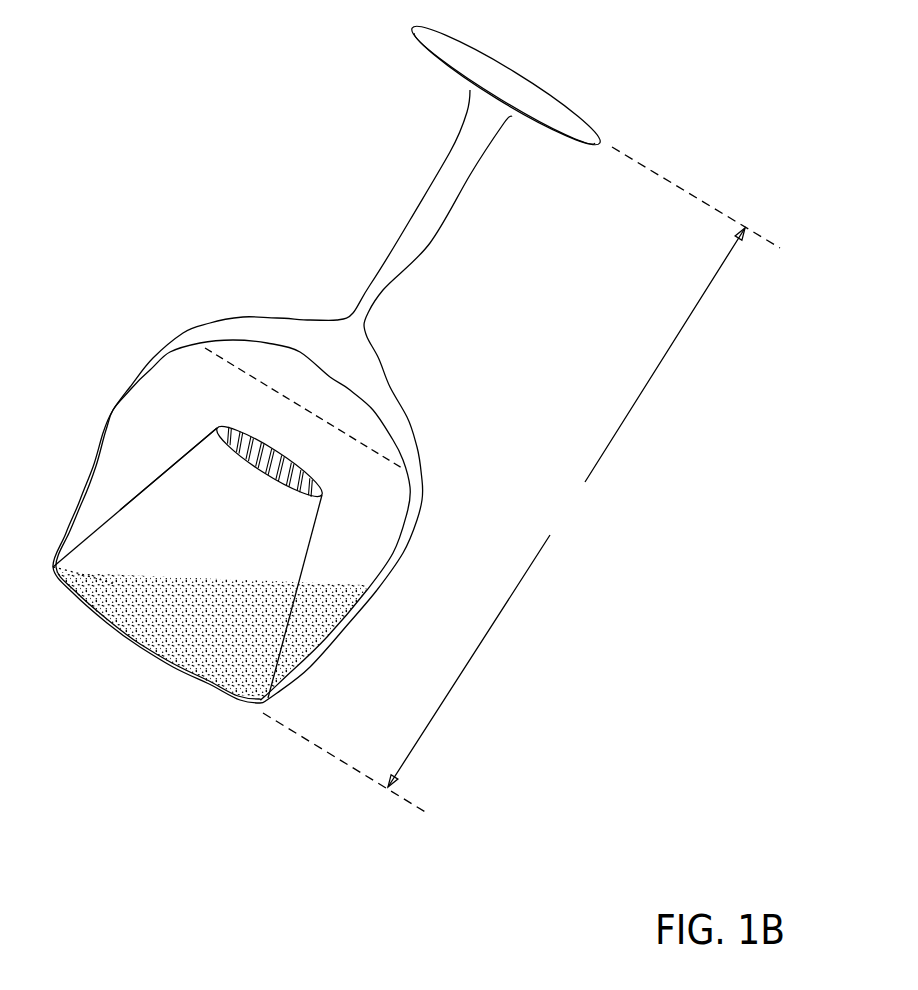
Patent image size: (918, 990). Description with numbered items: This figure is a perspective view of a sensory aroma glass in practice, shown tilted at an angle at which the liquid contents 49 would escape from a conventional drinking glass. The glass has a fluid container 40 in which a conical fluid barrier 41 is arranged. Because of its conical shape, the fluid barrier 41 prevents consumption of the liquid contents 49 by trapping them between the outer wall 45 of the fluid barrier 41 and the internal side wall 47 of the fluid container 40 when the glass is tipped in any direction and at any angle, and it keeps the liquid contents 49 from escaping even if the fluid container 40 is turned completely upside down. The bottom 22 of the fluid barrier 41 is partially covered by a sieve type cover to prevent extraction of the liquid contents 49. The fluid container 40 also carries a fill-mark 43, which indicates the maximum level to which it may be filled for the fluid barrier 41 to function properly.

The fluid container 40 is at (521, 480).
The fluid barrier 41 is at (247, 537).
The bottom of the fluid barrier 22 is at (279, 441).
The fill-mark 43 is at (183, 333).
The outer wall of the fluid barrier 45 is at (183, 457).
The internal side wall of the fluid container 47 is at (96, 461).
The liquid contents 49 is at (322, 645).